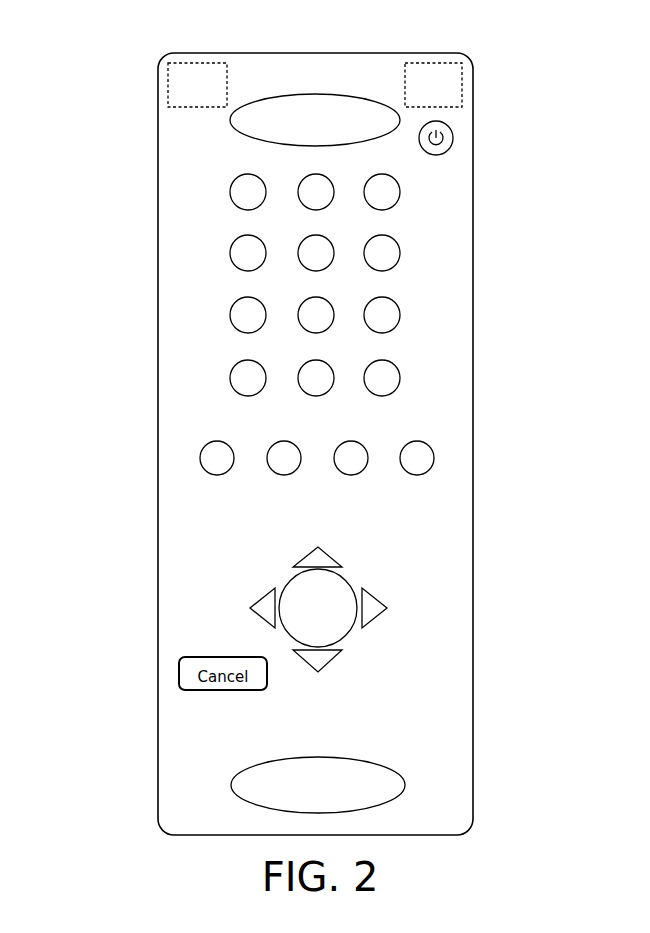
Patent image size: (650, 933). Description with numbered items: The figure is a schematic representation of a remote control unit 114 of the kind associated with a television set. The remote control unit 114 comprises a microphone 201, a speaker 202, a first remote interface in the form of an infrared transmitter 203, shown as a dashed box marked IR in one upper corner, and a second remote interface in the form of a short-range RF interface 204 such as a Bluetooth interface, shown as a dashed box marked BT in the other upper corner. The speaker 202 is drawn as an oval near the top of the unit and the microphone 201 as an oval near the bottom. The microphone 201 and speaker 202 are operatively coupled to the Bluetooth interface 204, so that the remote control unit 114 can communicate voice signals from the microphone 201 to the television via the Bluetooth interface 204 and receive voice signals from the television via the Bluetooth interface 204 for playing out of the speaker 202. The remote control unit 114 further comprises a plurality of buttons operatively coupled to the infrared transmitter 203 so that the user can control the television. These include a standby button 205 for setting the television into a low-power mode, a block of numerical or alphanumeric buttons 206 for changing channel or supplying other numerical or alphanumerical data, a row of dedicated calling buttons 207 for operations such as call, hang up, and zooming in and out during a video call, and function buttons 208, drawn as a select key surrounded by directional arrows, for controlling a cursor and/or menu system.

The remote control unit 114 is at (122, 163).
The microphone 201 is at (405, 787).
The speaker 202 is at (320, 94).
The infrared (IR) transmitter 203 is at (437, 62).
The short-range RF interface 204 is at (203, 62).
The standby button 205 is at (453, 138).
The numerical or alphanumeric buttons 206 is at (481, 168).
The dedicated calling buttons 207 is at (481, 435).
The function buttons 208 is at (481, 545).